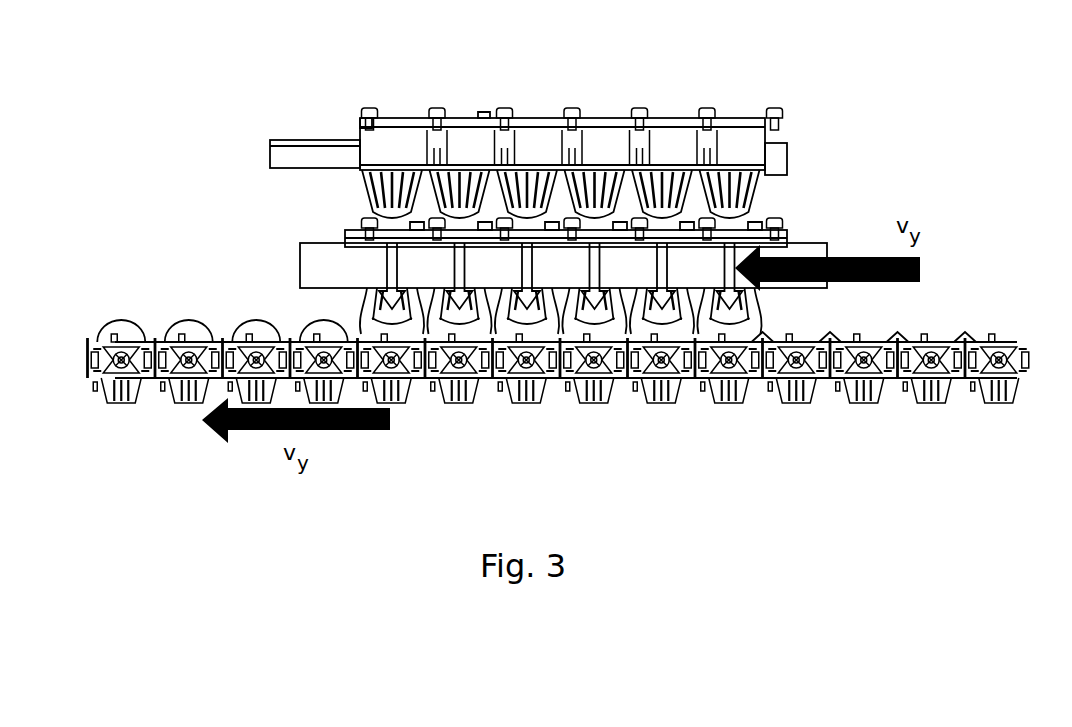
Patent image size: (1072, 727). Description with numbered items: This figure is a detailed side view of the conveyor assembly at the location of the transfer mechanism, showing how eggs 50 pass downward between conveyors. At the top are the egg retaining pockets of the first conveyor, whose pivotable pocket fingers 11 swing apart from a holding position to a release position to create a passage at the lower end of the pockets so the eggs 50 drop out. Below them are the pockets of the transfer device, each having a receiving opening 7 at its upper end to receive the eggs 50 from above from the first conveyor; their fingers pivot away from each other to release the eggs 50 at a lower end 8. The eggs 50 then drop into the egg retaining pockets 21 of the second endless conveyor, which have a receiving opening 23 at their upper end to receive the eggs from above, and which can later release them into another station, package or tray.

The receiving opening 7 is at (372, 220).
The lower end 8 is at (372, 330).
The pivotable pocket fingers 11 is at (370, 192).
The egg retaining pockets 21 is at (178, 403).
The receiving opening 23 is at (880, 340).
The eggs 50 is at (172, 336).